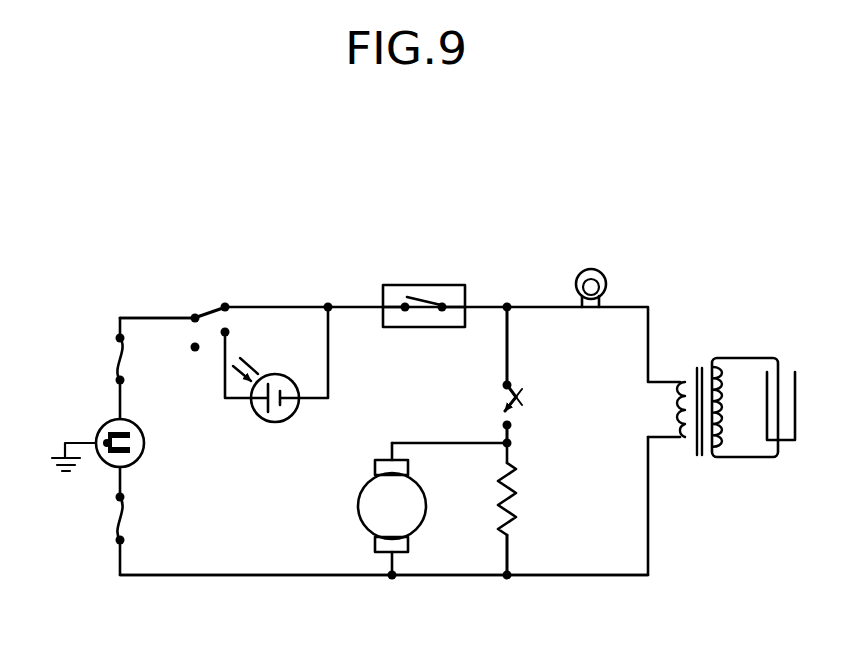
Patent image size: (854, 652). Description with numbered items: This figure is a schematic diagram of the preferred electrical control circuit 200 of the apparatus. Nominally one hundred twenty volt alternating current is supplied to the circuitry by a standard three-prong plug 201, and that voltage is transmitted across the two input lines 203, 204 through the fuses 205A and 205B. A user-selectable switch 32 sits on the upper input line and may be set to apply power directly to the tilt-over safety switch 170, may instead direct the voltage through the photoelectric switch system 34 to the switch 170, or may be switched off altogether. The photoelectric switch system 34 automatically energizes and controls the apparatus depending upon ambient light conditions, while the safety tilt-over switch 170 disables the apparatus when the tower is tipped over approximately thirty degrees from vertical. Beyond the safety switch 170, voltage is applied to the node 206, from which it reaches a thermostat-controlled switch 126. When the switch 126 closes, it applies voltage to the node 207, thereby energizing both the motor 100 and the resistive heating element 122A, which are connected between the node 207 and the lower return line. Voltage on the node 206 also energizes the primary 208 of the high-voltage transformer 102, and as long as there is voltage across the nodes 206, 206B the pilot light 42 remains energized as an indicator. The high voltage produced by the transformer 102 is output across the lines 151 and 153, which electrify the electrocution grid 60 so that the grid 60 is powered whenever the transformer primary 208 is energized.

The switch 32 is at (203, 313).
The photoelectric switch system 34 is at (290, 416).
The pilot light 42 is at (580, 272).
The electrocution grid 60 is at (777, 348).
The motor 100 is at (378, 492).
The high-voltage transformer 102 is at (688, 463).
The resistive heating element 122A is at (518, 495).
The thermostat-controlled switch 126 is at (524, 395).
The line 151 is at (757, 358).
The line 153 is at (755, 457).
The tilt-over safety switch 170 is at (430, 285).
The electrical control circuit 200 is at (294, 280).
The three-prong plug 201 is at (145, 443).
The input line 203 is at (172, 575).
The input line 204 is at (145, 318).
The fuse 205A is at (118, 357).
The fuse 205B is at (118, 522).
The node 206 is at (507, 305).
The node 206B is at (509, 572).
The node 207 is at (512, 425).
The primary 208 is at (670, 395).